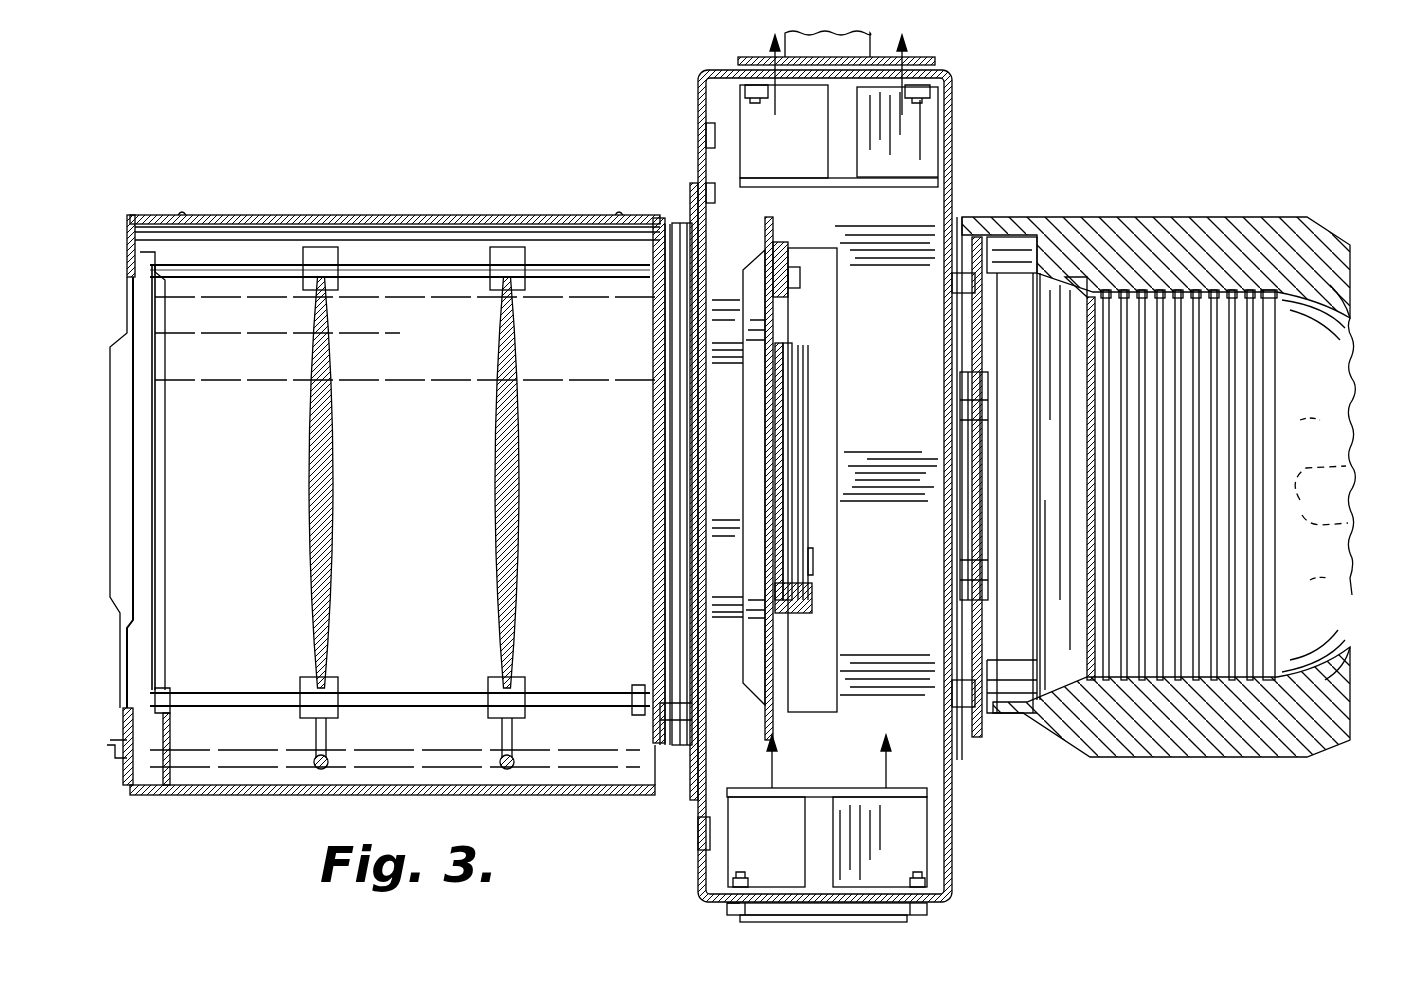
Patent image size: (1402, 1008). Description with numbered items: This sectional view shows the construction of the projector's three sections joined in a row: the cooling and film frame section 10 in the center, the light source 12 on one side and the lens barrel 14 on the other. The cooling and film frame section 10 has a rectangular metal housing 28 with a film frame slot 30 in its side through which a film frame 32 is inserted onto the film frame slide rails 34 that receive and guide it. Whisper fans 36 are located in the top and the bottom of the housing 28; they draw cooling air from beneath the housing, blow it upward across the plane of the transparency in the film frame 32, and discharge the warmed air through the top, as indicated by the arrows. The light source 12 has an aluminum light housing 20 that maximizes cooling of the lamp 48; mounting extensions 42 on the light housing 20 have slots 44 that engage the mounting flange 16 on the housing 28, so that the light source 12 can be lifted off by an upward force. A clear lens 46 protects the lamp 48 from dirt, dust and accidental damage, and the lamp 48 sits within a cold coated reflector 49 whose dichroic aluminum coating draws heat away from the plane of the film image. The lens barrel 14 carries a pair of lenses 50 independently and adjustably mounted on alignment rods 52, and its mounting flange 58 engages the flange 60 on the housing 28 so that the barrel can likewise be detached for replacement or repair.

The cooling and film frame section 10 is at (834, 476).
The light source 12 is at (1200, 760).
The lens barrel 14 is at (448, 213).
The mounting flange 16 is at (957, 318).
The light housing 20 is at (1079, 217).
The housing 28 is at (960, 156).
The film frame slot 30 is at (837, 362).
The film frame 32 is at (773, 635).
The film frame slide rails 34 is at (770, 737).
The whisper fans 36 is at (760, 118).
The mounting extensions 42 is at (973, 236).
The slots 44 is at (1013, 234).
The clear lens 46 is at (1110, 280).
The lamp 48 is at (1338, 524).
The cold coated reflector 49 is at (1325, 398).
The lenses 50 is at (334, 478).
The alignment rods 52 is at (225, 265).
The mounting flange 58 is at (670, 225).
The flange 60 is at (684, 235).